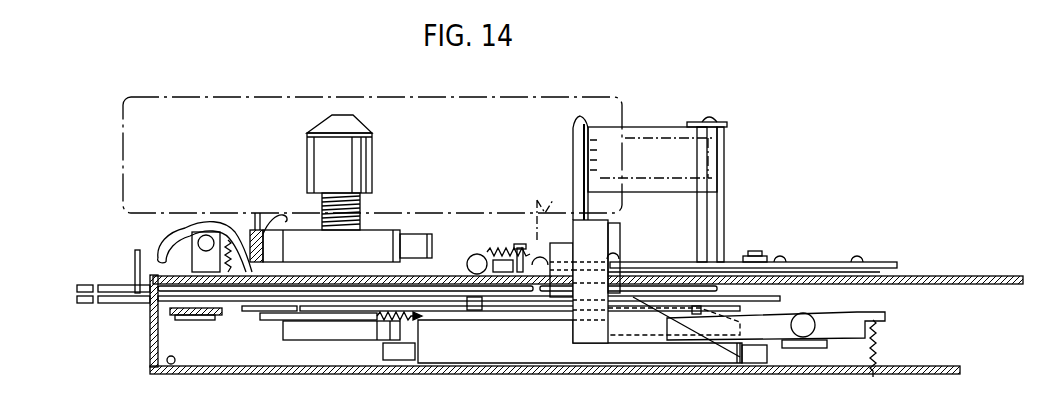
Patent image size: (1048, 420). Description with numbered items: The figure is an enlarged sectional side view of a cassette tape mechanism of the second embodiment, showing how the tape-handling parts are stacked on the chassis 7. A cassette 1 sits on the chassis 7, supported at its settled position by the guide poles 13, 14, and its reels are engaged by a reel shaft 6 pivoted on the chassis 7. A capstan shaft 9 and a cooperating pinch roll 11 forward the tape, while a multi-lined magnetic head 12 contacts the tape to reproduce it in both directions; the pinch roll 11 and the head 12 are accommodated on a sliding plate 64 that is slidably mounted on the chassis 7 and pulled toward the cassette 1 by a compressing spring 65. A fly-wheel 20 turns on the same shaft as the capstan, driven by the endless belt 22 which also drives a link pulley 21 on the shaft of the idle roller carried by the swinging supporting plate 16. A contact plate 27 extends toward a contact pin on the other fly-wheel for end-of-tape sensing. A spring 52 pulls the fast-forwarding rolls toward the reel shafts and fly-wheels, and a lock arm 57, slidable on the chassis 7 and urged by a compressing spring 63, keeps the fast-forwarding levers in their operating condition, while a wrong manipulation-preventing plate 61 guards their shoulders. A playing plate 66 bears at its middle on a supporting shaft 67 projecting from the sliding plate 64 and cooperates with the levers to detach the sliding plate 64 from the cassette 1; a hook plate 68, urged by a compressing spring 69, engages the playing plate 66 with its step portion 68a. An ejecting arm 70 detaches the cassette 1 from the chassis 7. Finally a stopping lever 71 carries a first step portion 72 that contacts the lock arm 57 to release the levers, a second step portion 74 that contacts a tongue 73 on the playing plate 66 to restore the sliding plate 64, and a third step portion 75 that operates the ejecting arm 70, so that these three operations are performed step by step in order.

The cassette 1 is at (392, 96).
The reel shaft 6 is at (325, 160).
The chassis 7 is at (947, 277).
The capstan shaft 9 is at (575, 120).
The pinch roll 11 is at (655, 133).
The multi-lined magnetic head 12 is at (606, 130).
The guide pole 13 is at (545, 195).
The guide pole 14 is at (252, 228).
The swinging supporting plate 16 is at (246, 312).
The fly-wheel 20 is at (485, 363).
The link pulley 21 is at (360, 246).
The endless belt 22 is at (400, 358).
The contact plate 27 is at (104, 287).
The spring 52 is at (397, 320).
The lock arm 57 is at (488, 252).
The wrong manipulation-preventing plate 61 is at (234, 316).
The compressing spring 63 is at (477, 254).
The sliding plate 64 is at (824, 263).
The compressing spring 65 is at (556, 205).
The playing plate 66 is at (660, 295).
The supporting shaft 67 is at (758, 256).
The hook plate 68 is at (592, 343).
The step portion 68a is at (668, 320).
The compressing spring 69 is at (878, 350).
The ejecting arm 70 is at (188, 226).
The stopping lever 71 is at (120, 303).
The first step portion 72 is at (482, 310).
The tongue 73 is at (697, 305).
The second step portion 74 is at (748, 365).
The third step portion 75 is at (134, 260).